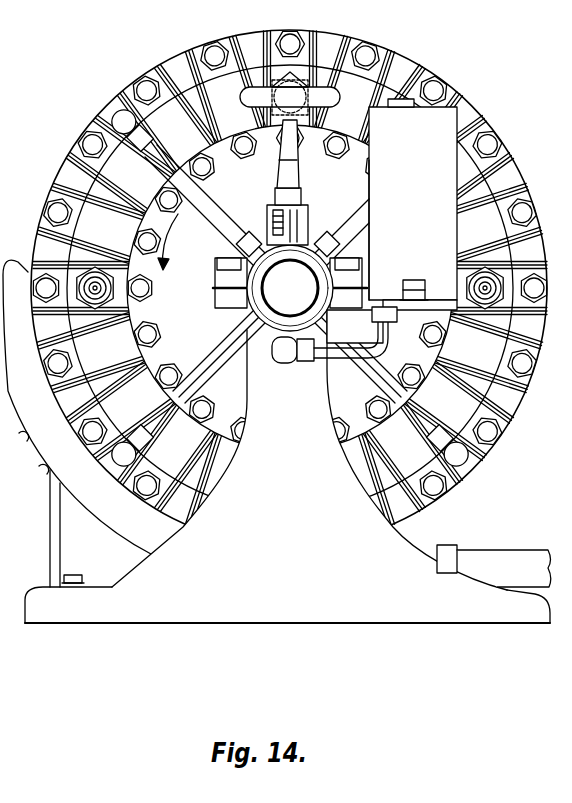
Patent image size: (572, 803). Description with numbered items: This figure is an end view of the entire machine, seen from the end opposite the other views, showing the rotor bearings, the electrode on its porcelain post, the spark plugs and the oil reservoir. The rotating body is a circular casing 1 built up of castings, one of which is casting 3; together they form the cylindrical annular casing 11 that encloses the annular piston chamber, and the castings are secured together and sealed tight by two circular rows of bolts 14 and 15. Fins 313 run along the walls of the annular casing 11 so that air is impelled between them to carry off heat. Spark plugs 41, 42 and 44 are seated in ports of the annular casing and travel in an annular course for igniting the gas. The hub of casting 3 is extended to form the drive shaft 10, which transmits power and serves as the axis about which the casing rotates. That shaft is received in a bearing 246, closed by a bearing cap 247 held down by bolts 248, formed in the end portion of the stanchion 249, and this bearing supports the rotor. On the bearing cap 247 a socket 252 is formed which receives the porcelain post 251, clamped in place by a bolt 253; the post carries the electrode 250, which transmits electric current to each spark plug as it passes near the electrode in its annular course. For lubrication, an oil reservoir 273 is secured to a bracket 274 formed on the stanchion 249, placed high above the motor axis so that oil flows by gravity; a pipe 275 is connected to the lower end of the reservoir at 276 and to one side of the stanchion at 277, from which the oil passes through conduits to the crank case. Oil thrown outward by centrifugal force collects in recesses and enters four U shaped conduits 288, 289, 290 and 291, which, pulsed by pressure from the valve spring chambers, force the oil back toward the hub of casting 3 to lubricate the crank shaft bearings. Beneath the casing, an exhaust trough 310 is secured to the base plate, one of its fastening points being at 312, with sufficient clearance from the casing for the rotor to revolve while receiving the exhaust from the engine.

The circular casing 1 is at (476, 470).
The casting 3 is at (420, 500).
The drive shaft 10 is at (280, 322).
The cylindrical annular casing 11 is at (500, 197).
The bolts 14 is at (245, 151).
The bolts 15 is at (146, 90).
The spark plug 41 is at (290, 93).
The spark plug 42 is at (78, 296).
The spark plug 44 is at (468, 288).
The bearing 246 is at (216, 306).
The bearing cap 247 is at (216, 288).
The bolts 248 is at (218, 263).
The stanchion 249 is at (255, 356).
The electrode 250 is at (372, 112).
The porcelain post 251 is at (300, 180).
The socket 252 is at (302, 200).
The bolt 253 is at (268, 224).
The oil reservoir 273 is at (368, 159).
The bracket 274 is at (412, 312).
The pipe 275 is at (388, 330).
The reservoir connection 276 is at (355, 326).
The stanchion connection 277 is at (283, 364).
The U shaped conduit 288 is at (362, 217).
The U shaped conduit 289 is at (188, 186).
The U shaped conduit 290 is at (219, 356).
The U shaped conduit 291 is at (372, 382).
The exhaust trough 310 is at (140, 527).
The securing point 312 is at (88, 575).
The fins 313 is at (72, 165).